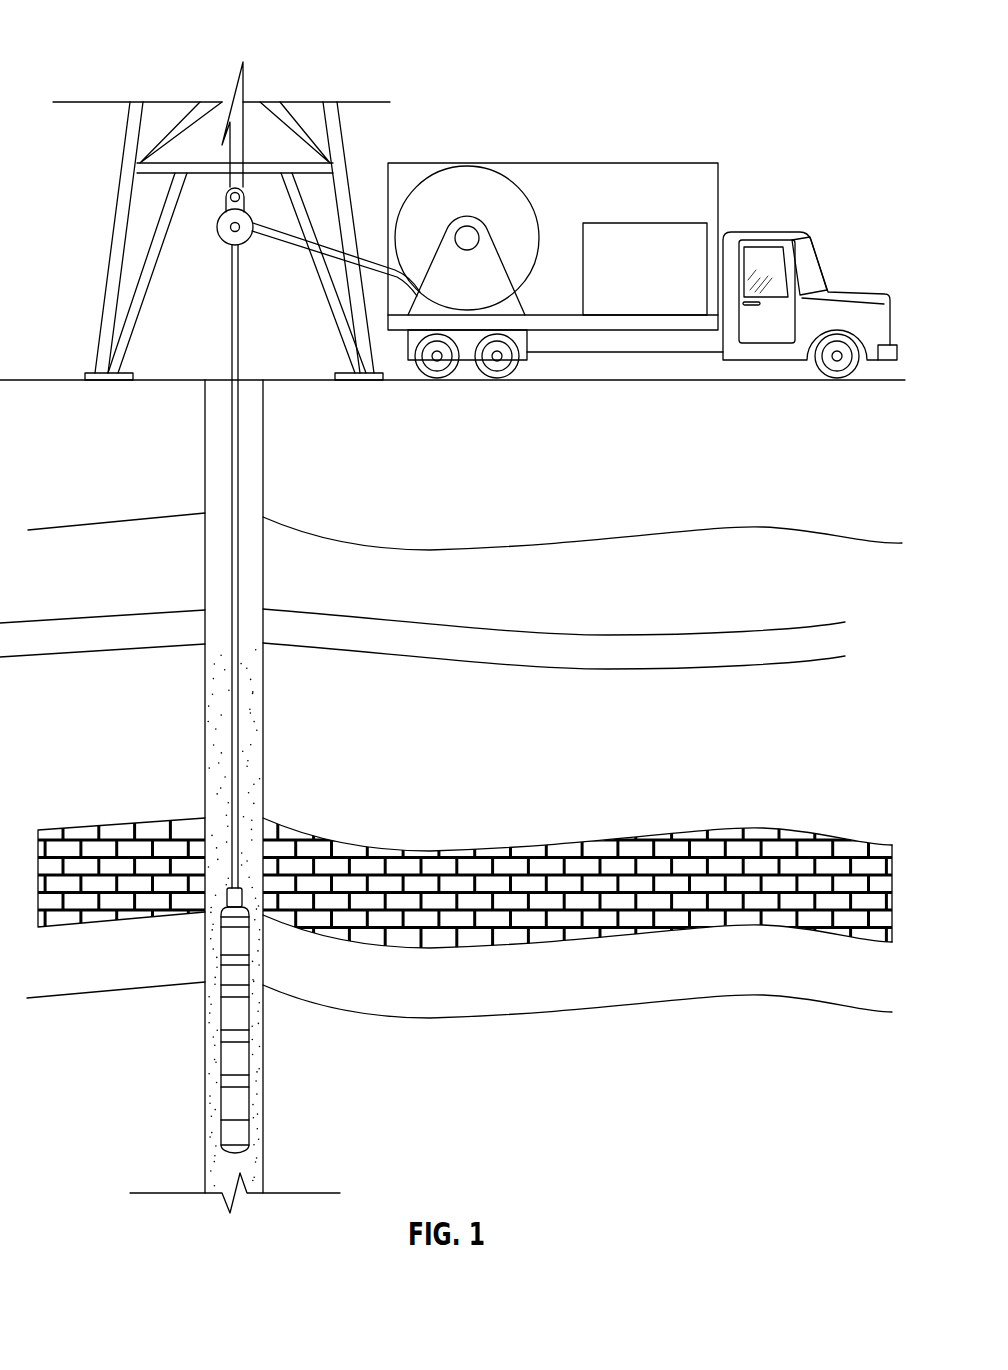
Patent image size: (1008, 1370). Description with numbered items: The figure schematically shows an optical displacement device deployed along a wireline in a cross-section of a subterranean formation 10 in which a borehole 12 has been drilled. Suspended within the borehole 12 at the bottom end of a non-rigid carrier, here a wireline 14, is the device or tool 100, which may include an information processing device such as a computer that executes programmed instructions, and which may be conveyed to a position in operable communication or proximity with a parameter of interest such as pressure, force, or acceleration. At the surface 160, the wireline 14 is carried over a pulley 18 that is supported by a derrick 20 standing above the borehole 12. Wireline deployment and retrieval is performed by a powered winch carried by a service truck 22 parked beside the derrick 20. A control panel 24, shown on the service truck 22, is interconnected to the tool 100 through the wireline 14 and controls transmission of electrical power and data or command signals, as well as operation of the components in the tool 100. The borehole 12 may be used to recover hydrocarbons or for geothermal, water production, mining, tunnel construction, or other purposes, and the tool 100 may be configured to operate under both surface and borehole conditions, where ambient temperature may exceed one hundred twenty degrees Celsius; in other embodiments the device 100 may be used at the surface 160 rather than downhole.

The subterranean formation 10 is at (582, 600).
The borehole 12 is at (205, 572).
The wireline 14 is at (238, 575).
The pulley 18 is at (217, 229).
The derrick 20 is at (122, 168).
The service truck 22 is at (587, 163).
The control panel 24 is at (643, 222).
The tool 100 is at (237, 1057).
The surface 160 is at (35, 381).